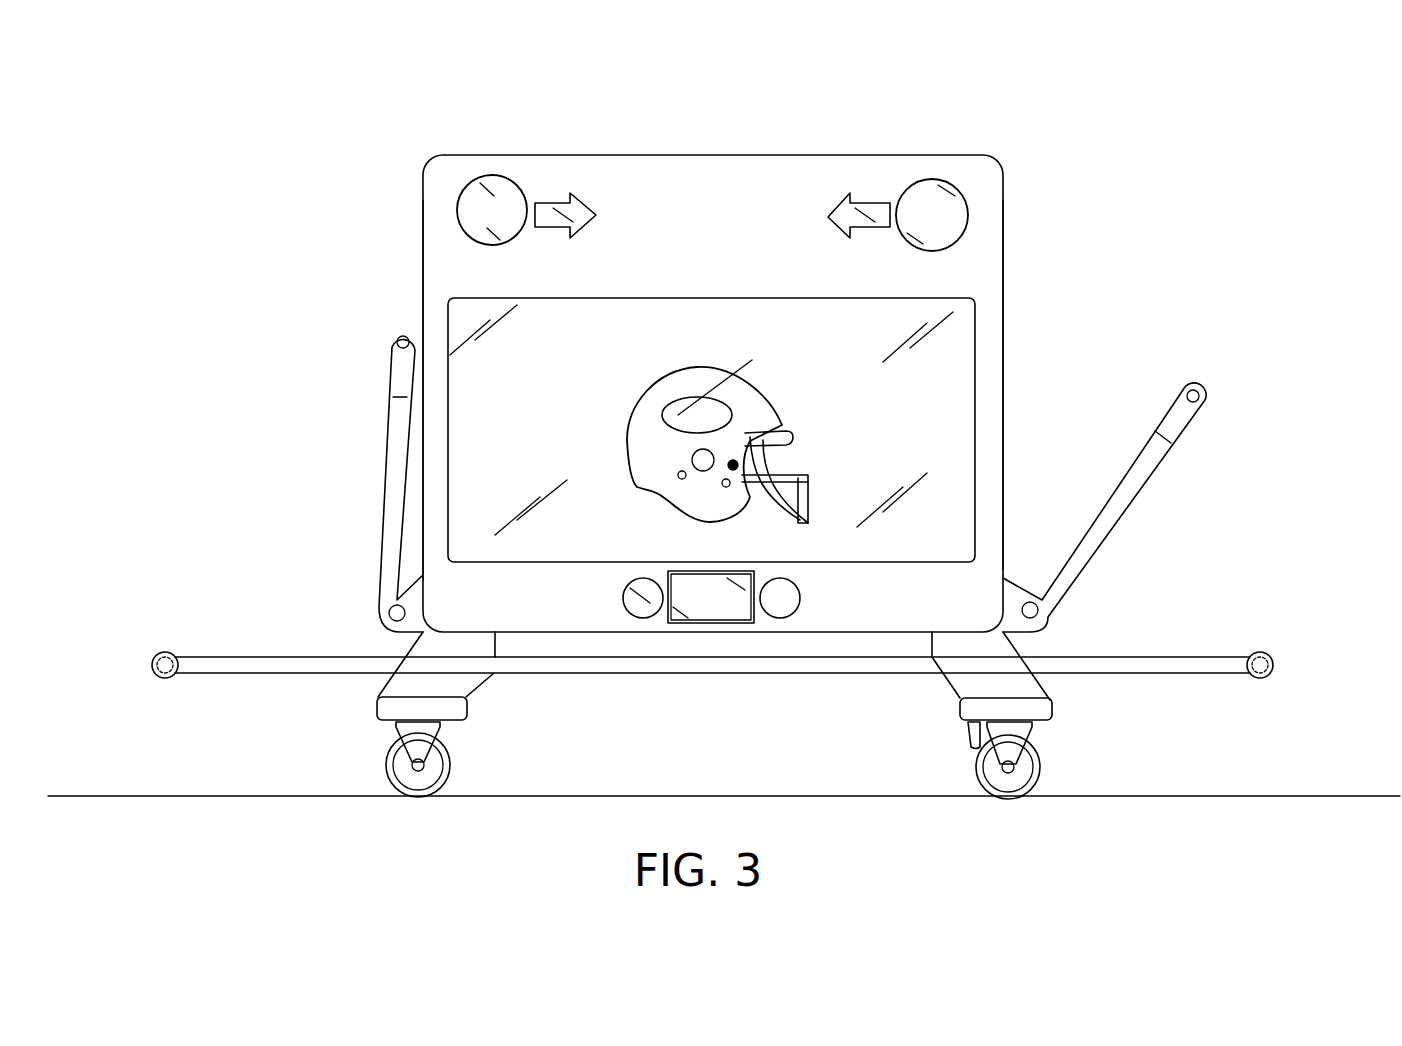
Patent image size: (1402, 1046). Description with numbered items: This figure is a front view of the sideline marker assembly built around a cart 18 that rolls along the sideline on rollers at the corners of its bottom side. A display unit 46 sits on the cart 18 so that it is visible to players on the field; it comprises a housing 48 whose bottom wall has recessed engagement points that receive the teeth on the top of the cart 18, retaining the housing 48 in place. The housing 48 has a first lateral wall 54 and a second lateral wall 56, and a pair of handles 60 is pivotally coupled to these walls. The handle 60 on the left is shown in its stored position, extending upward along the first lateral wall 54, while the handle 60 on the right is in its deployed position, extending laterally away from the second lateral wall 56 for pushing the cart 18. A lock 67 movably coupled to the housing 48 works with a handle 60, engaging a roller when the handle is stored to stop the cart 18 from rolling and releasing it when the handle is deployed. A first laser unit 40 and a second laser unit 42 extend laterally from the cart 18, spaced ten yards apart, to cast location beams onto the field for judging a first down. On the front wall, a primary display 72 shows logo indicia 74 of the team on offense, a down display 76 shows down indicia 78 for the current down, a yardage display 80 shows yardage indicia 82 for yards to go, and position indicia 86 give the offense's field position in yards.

The cart 18 is at (533, 725).
The first laser unit 40 is at (1207, 598).
The second laser unit 42 is at (202, 590).
The display unit 46 is at (730, 100).
The housing 48 is at (427, 165).
The first lateral wall 54 is at (422, 243).
The second lateral wall 56 is at (1004, 330).
The handles 60 is at (345, 460).
The lock 67 is at (973, 738).
The primary display 72 is at (809, 297).
The logo indicia 74 is at (738, 330).
The down display 76 is at (467, 185).
The down indicia 78 is at (492, 158).
The yardage display 80 is at (963, 190).
The yardage indicia 82 is at (931, 158).
The position indicia 86 is at (700, 650).